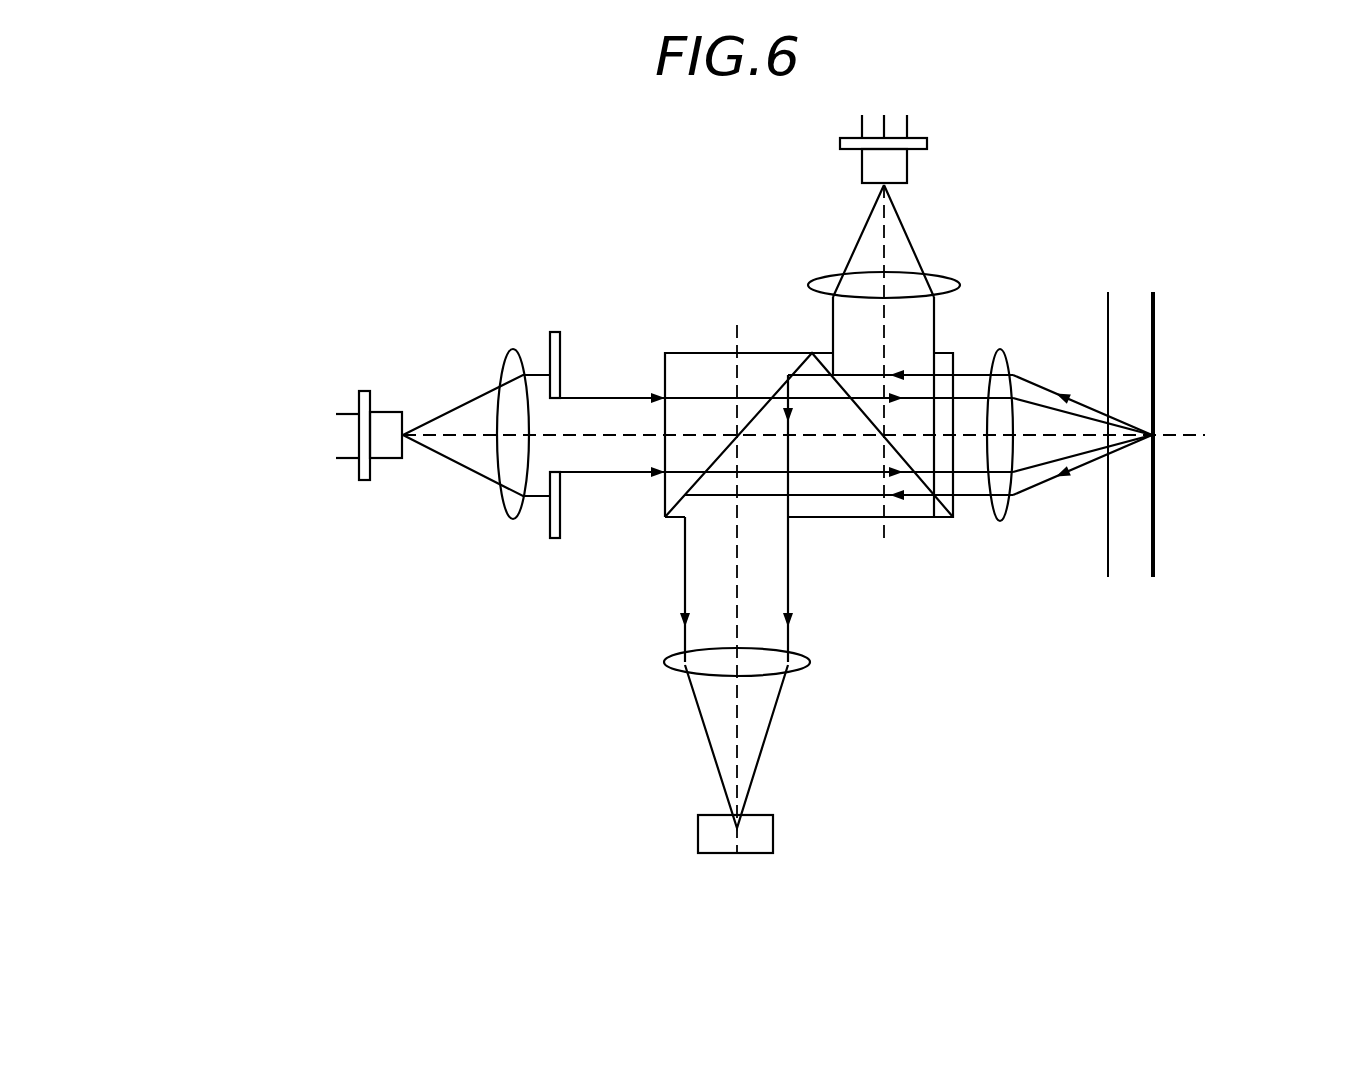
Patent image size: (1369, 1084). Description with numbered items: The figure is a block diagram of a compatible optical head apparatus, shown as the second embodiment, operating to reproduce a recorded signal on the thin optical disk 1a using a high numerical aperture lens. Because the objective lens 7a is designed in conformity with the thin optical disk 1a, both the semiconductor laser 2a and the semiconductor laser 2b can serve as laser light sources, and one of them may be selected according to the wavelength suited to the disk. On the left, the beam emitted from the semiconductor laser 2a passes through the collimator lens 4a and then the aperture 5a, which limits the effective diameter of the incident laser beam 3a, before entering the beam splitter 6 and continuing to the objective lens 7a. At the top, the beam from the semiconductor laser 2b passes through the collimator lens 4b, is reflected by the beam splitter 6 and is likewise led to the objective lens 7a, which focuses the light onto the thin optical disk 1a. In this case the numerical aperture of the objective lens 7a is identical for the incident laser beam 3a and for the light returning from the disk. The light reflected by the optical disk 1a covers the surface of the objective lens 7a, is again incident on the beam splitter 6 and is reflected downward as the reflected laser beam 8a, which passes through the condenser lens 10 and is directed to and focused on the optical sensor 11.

The thin optical disk 1a is at (1155, 488).
The semiconductor laser 2a is at (347, 413).
The semiconductor laser 2b is at (907, 162).
The incident laser beam 3a is at (853, 495).
The collimator lens 4a is at (503, 352).
The collimator lens 4b is at (812, 285).
The aperture 5a is at (550, 522).
The beam splitter 6 is at (685, 353).
The objective lens 7a is at (1007, 350).
The reflected laser beam 8a is at (685, 588).
The condenser lens 10 is at (808, 662).
The optical sensor 11 is at (697, 845).